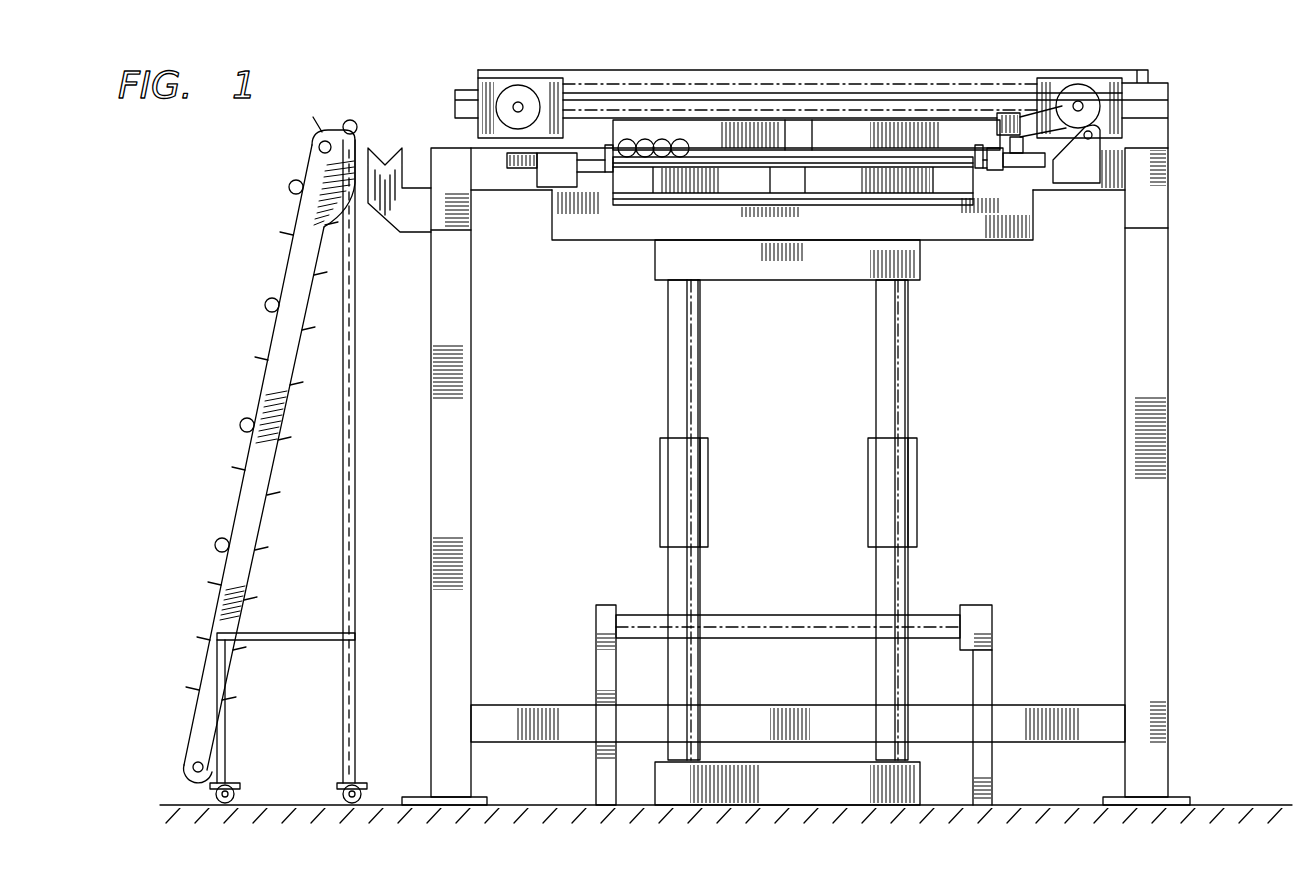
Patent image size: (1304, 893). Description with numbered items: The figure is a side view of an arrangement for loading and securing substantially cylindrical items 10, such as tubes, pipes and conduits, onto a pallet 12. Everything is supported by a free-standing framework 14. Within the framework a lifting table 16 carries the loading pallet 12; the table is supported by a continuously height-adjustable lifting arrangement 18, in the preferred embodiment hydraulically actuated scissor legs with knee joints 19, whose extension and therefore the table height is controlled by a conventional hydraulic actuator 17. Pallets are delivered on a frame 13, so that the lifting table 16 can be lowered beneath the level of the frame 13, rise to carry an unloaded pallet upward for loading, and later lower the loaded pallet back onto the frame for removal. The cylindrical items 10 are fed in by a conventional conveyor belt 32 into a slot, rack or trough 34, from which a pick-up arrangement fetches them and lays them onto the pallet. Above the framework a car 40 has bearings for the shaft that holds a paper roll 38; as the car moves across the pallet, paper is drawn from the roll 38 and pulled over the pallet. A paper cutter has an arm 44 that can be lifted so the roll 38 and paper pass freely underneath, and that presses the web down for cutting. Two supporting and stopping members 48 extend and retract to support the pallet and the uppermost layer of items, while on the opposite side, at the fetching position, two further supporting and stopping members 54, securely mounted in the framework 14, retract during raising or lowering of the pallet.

The cylindrical items 10 is at (683, 140).
The pallet 12 is at (957, 205).
The frame 13 is at (636, 612).
The framework 14 is at (1170, 527).
The lifting table 16 is at (980, 232).
The hydraulic actuator 17 is at (830, 790).
The lifting arrangement 18 is at (912, 390).
The knee joints 19 is at (917, 490).
The conveyor belt 32 is at (213, 515).
The trough 34 is at (389, 158).
The paper roll 38 is at (533, 108).
The car 40 is at (497, 77).
The arm 44 is at (1005, 113).
The supporting and stopping members 48 is at (1002, 170).
The supporting and stopping members 54 is at (607, 175).